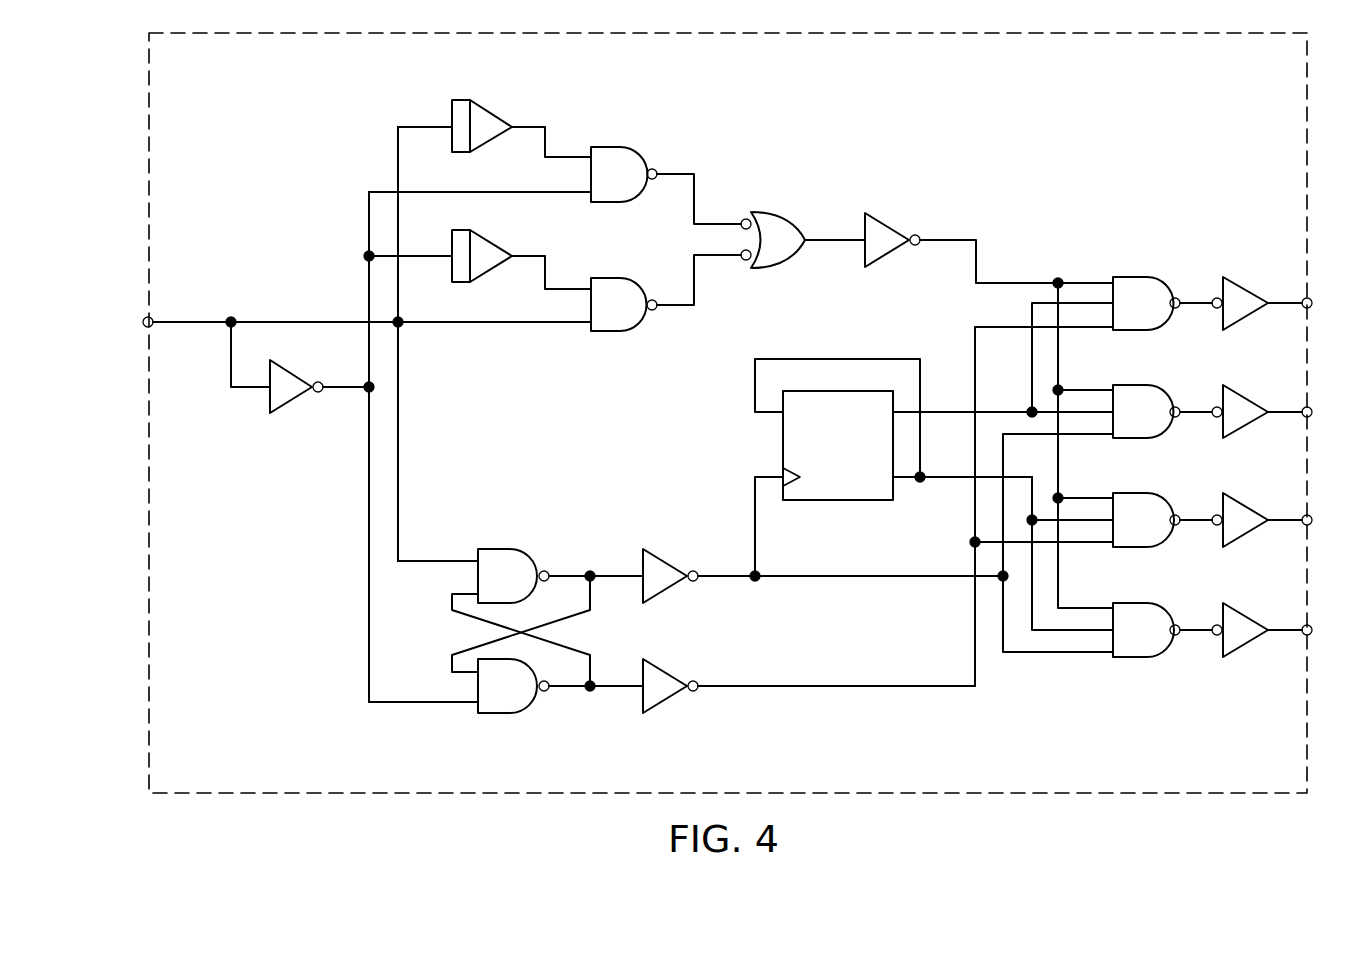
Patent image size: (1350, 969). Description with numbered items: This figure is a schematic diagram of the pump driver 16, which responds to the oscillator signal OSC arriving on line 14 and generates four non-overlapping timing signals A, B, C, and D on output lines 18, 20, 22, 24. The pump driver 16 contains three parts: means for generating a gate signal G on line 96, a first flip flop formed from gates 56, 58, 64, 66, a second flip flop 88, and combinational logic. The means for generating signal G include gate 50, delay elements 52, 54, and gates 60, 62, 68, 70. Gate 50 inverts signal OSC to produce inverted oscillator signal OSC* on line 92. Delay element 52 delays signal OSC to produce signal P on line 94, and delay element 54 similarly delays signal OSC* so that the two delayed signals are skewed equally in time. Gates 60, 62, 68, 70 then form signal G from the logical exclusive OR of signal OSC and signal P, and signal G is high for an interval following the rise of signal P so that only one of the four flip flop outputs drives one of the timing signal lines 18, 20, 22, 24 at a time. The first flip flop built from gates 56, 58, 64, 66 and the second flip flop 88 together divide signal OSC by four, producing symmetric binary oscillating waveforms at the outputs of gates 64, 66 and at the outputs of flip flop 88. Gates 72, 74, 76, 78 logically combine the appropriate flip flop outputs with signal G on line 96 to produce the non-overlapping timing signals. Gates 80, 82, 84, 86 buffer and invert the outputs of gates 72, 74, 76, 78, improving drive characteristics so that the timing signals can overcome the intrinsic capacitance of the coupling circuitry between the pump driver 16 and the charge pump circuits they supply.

The line 14 is at (206, 324).
The pump driver 16 is at (390, 70).
The line 18 is at (1292, 300).
The line 20 is at (1292, 410).
The line 22 is at (1292, 515).
The line 24 is at (1292, 625).
The gate 50 is at (293, 398).
The delay element 52 is at (490, 112).
The delay element 54 is at (490, 268).
The gate 56 is at (510, 552).
The gate 58 is at (510, 708).
The gate 60 is at (611, 150).
The gate 62 is at (617, 330).
The gate 64 is at (668, 548).
The gate 66 is at (668, 700).
The gate 68 is at (782, 222).
The gate 70 is at (893, 225).
The gate 72 is at (1145, 280).
The gate 74 is at (1145, 388).
The gate 76 is at (1145, 496).
The gate 78 is at (1145, 606).
The gate 80 is at (1245, 290).
The gate 82 is at (1245, 400).
The gate 84 is at (1245, 508).
The gate 86 is at (1245, 618).
The second flip flop 88 is at (850, 461).
The line 92 is at (366, 255).
The line 94 is at (535, 125).
The line 96 is at (1030, 282).